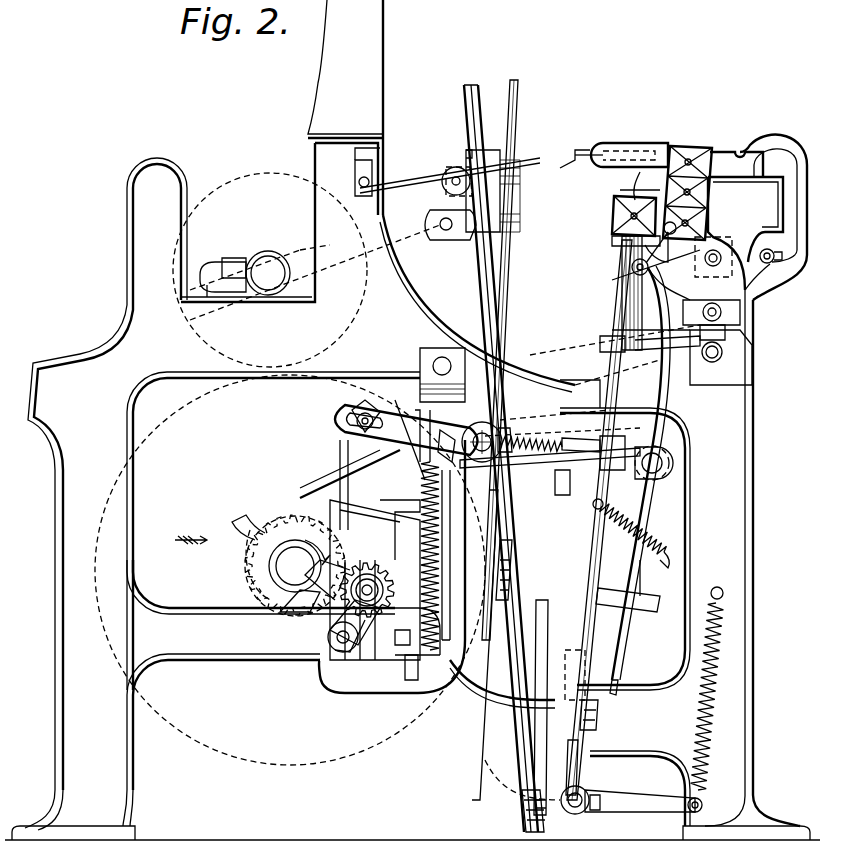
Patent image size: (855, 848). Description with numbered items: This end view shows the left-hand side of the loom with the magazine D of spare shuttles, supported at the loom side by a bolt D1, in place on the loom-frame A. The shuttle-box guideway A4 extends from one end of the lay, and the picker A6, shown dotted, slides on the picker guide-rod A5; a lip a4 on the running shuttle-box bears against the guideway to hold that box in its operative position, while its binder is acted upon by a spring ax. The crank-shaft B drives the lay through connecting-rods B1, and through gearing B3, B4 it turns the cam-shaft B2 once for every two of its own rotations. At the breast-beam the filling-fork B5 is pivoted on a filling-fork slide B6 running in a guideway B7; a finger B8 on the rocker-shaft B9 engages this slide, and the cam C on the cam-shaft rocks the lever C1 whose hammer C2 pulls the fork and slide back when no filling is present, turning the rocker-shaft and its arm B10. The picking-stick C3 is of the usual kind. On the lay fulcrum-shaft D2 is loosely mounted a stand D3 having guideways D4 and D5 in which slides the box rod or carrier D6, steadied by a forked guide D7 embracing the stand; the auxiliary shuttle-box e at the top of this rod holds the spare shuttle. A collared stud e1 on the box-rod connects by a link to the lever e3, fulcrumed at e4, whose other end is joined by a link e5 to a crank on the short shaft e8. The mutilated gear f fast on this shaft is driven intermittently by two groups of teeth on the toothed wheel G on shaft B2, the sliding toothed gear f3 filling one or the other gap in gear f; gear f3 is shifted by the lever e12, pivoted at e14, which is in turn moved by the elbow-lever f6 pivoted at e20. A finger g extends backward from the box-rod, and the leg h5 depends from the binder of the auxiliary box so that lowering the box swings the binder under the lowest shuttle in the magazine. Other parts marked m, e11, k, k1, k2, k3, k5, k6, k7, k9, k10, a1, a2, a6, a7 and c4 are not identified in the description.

The loom-frame A is at (412, 420).
The shuttle-box guideway A4 is at (456, 204).
The picker guide-rod A5 is at (466, 176).
The picker A6 is at (476, 160).
The lip or projection a4 is at (476, 163).
The link rod m is at (392, 170).
The crank-shaft B is at (265, 262).
The connecting-rods B1 is at (292, 250).
The cam-shaft B2 is at (286, 566).
The gearing B3 is at (244, 178).
The gearing B4 is at (250, 766).
The filling-fork B5 is at (572, 168).
The filling-fork slide B6 is at (618, 150).
The guideway B7 is at (718, 154).
The finger B8 is at (760, 143).
The rocker-shaft B9 is at (770, 270).
The extended arm B10 is at (760, 300).
The cam C is at (268, 598).
The lever C1 is at (350, 466).
The hammer C2 is at (640, 190).
The picking-stick C3 is at (508, 706).
The magazine D is at (706, 190).
The bolt D1 is at (728, 222).
The lay fulcrum-shaft D2 is at (580, 808).
The stand D3 is at (606, 498).
The guideway D4 is at (600, 338).
The guideway D5 is at (628, 668).
The box rod or carrier D6 is at (616, 292).
The forked guide D7 is at (550, 454).
The auxiliary shuttle-box e is at (625, 192).
The collared stud e1 is at (590, 716).
The lever e3 is at (640, 538).
The fulcrum e4 is at (478, 424).
The link e5 is at (362, 538).
The short shaft e8 is at (414, 634).
The arm e11 is at (420, 462).
The lever e12 is at (402, 690).
The pivot e14 is at (302, 606).
The pivot e20 is at (555, 486).
The mutilated gear f is at (372, 612).
The sliding toothed gear f3 is at (336, 652).
The elbow-lever f6 is at (440, 436).
The toothed wheel G is at (258, 545).
The rod or finger g is at (514, 426).
The depending leg h5 is at (663, 418).
The plunger k is at (622, 255).
The link k1 is at (650, 272).
The block k2 is at (628, 232).
The arm k3 is at (680, 288).
The curved lever k5 is at (680, 310).
The spring k6 is at (642, 540).
The bar k7 is at (660, 596).
The rod end k9 is at (590, 750).
The hatched block k10 is at (630, 214).
The bolt a1 is at (735, 325).
The plate a2 is at (745, 350).
The spring ax is at (745, 370).
The spring a6 is at (708, 706).
The lever a7 is at (664, 800).
The bar c4 is at (660, 302).